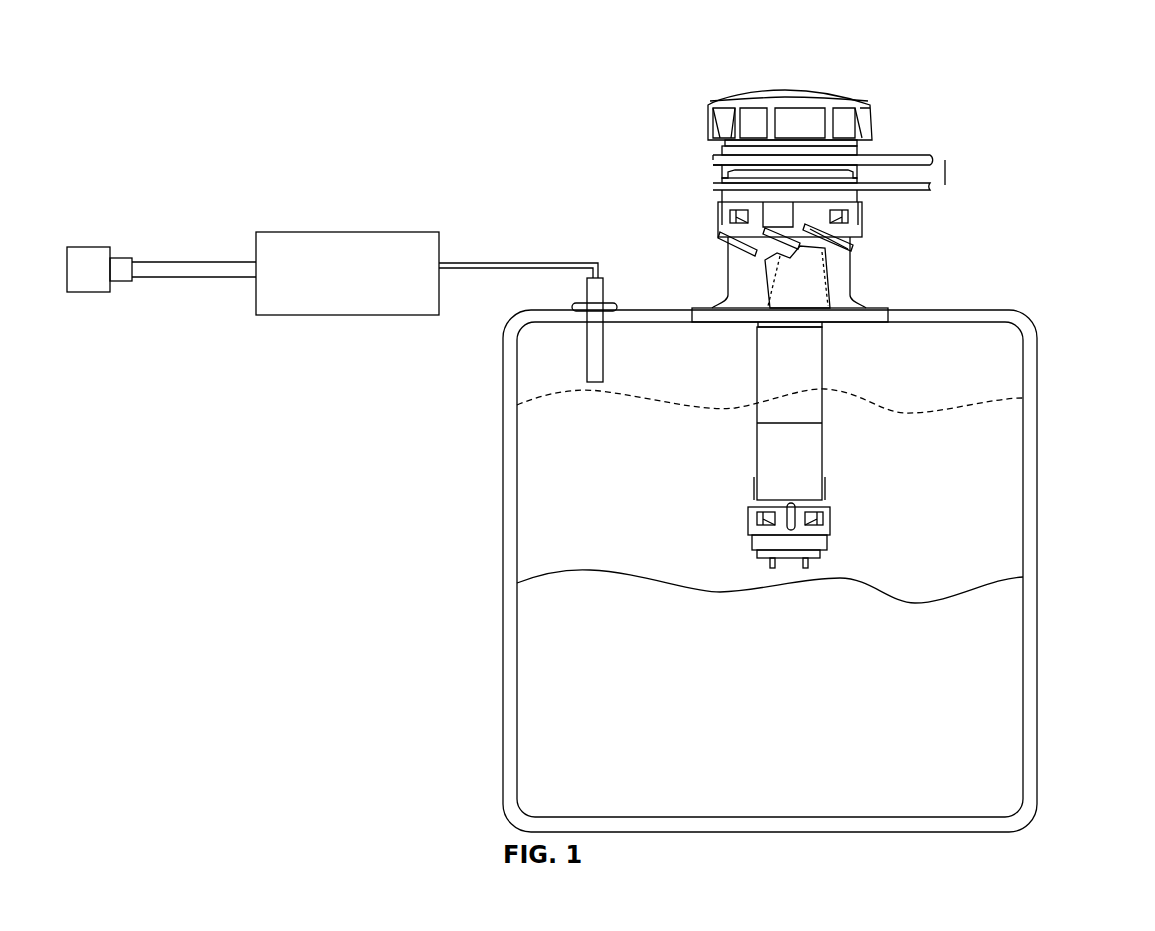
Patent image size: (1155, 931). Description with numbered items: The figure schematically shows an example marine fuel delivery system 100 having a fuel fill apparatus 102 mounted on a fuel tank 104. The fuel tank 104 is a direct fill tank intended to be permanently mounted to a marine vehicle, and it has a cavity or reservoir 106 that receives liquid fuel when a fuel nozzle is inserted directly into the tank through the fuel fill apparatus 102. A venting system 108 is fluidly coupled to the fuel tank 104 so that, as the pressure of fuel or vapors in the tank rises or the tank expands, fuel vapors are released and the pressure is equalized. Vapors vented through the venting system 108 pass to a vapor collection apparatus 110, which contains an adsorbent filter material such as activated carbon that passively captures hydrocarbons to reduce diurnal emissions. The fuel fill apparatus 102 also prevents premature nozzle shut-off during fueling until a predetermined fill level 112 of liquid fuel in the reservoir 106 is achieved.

The marine fuel delivery system 100 is at (1070, 100).
The fuel fill apparatus 102 is at (849, 94).
The fuel tank 104 is at (1037, 463).
The reservoir 106 is at (980, 535).
The venting system 108 is at (342, 256).
The vapor collection apparatus 110 is at (368, 232).
The predetermined fill level 112 is at (1005, 398).